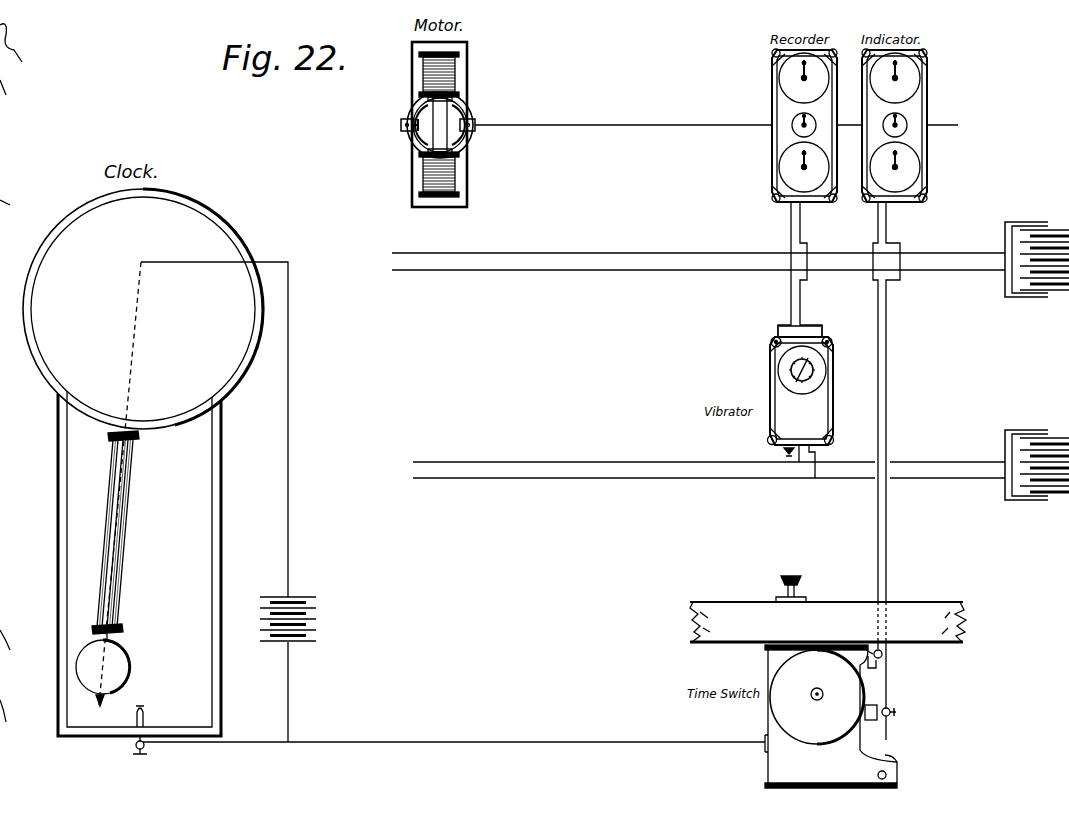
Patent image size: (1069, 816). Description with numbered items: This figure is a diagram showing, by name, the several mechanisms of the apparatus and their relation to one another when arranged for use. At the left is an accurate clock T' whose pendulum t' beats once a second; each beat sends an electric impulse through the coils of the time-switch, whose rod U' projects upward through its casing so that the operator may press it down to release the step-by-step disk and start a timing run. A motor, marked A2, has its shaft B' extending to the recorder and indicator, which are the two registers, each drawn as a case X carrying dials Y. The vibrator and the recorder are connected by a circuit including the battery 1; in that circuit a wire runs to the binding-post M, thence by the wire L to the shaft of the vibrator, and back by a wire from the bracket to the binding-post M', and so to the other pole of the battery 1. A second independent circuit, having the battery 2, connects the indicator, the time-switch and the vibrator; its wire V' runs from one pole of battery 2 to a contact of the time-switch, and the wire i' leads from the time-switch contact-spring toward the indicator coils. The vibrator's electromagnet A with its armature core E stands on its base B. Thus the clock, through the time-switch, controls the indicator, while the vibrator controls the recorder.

The motor electromagnet A2 is at (426, 124).
The motor shaft B' is at (716, 114).
The recorder/indicator case X is at (772, 156).
The dial Y is at (849, 122).
The binding-post M' is at (762, 332).
The binding-post M is at (842, 346).
The wire L is at (828, 328).
The vibrator electromagnet A is at (780, 375).
The armature core E is at (816, 373).
The vibrator base B is at (801, 407).
The battery 1 is at (1037, 248).
The battery 2 is at (1037, 456).
The pendulum t' is at (110, 484).
The rod U' is at (777, 586).
The contact wire i' is at (867, 614).
The wire V' is at (899, 471).